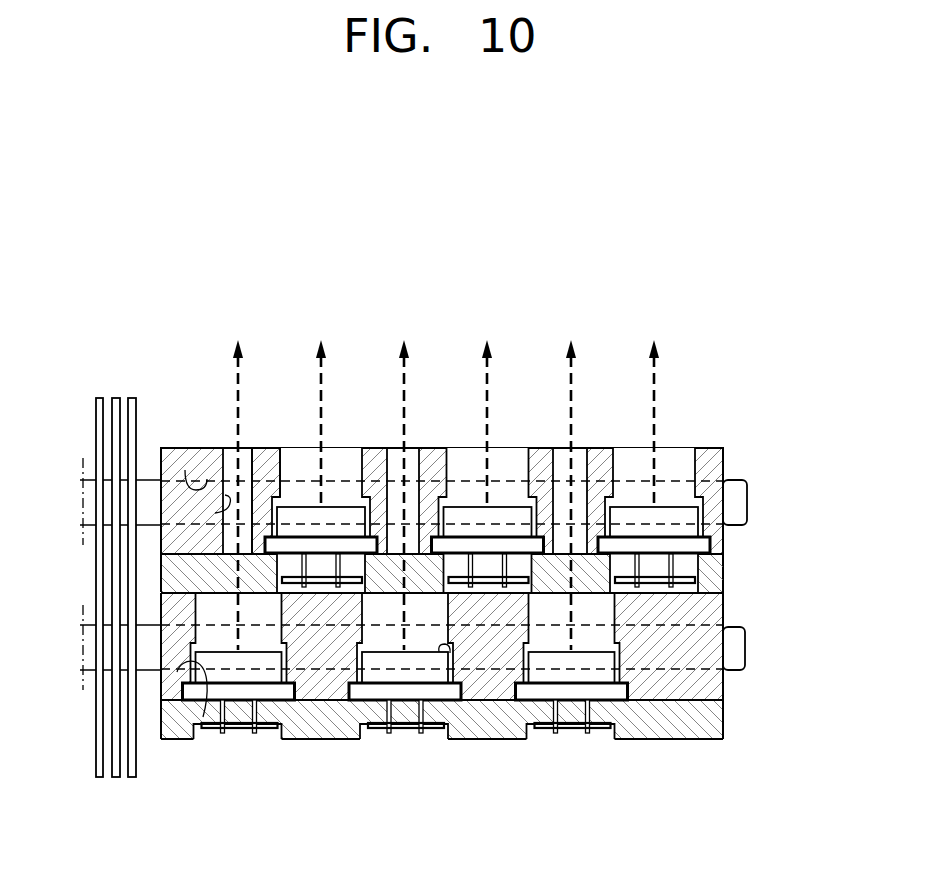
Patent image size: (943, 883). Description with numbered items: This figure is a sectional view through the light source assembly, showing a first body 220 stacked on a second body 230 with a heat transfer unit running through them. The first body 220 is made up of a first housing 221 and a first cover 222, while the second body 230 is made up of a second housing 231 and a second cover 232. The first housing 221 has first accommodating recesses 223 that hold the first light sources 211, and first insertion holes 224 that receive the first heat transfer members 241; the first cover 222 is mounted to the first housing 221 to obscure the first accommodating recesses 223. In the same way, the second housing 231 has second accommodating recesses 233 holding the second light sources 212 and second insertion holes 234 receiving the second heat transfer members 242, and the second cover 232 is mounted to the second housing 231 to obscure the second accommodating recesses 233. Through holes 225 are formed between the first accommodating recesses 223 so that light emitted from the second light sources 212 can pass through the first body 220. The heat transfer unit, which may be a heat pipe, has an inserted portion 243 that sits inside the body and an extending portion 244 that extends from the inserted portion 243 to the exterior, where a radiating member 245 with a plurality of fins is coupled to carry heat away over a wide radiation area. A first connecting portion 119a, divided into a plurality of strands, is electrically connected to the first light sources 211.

The first connecting portion 119a is at (673, 563).
The first light sources 211 is at (270, 545).
The second light sources 212 is at (260, 678).
The first body 220 is at (737, 453).
The first housing 221 is at (713, 468).
The first cover 222 is at (713, 580).
The first accommodating recesses 223 is at (364, 506).
The first insertion holes 224 is at (185, 470).
The through holes 225 is at (215, 513).
The second body 230 is at (737, 687).
The second housing 231 is at (708, 612).
The second cover 232 is at (685, 725).
The second accommodating recesses 233 is at (440, 655).
The second insertion holes 234 is at (203, 717).
The first heat transfer members 241 is at (140, 283).
The second heat transfer members 242 is at (148, 677).
The inserted portion 243 is at (291, 480).
The extending portion 244 is at (152, 490).
The radiating member 245 is at (98, 773).